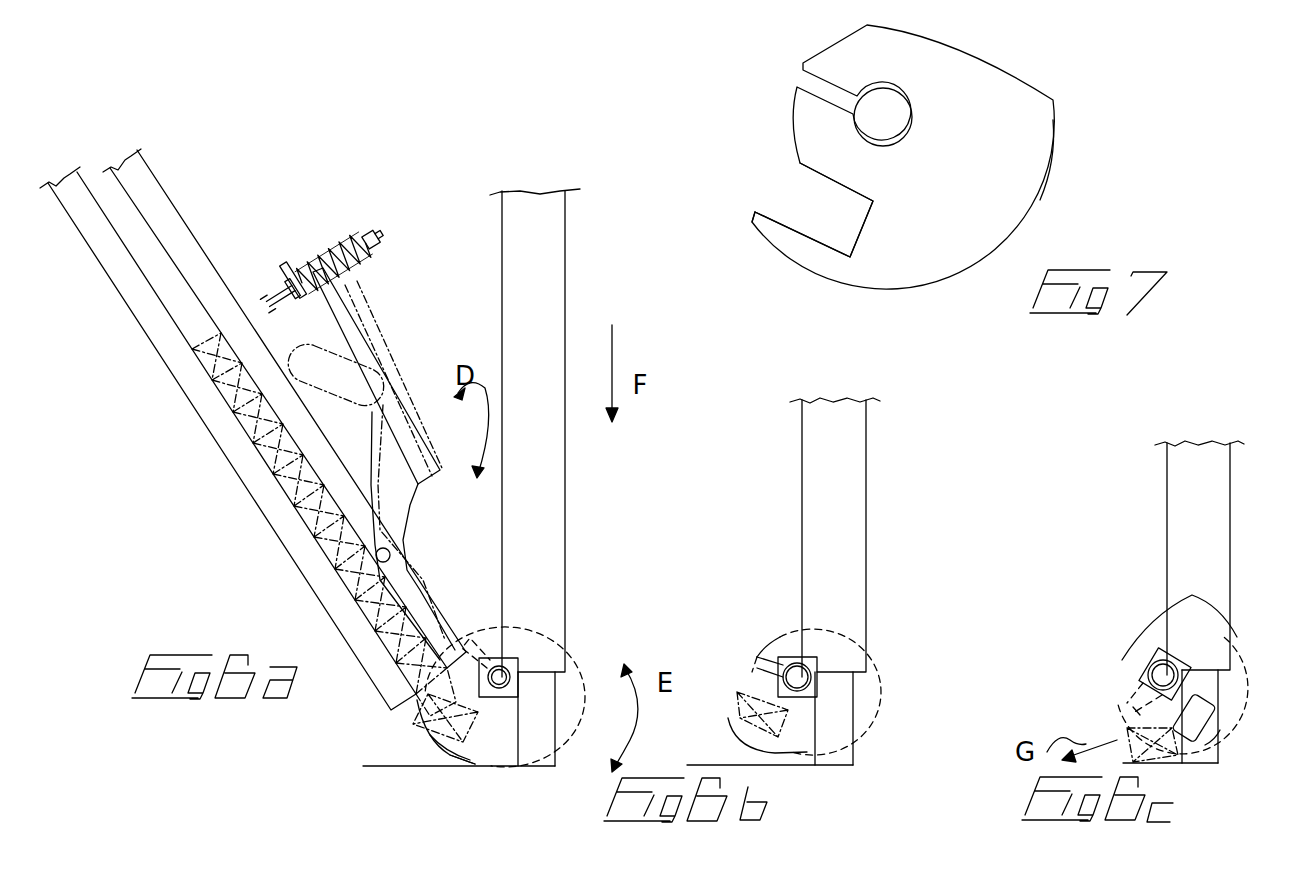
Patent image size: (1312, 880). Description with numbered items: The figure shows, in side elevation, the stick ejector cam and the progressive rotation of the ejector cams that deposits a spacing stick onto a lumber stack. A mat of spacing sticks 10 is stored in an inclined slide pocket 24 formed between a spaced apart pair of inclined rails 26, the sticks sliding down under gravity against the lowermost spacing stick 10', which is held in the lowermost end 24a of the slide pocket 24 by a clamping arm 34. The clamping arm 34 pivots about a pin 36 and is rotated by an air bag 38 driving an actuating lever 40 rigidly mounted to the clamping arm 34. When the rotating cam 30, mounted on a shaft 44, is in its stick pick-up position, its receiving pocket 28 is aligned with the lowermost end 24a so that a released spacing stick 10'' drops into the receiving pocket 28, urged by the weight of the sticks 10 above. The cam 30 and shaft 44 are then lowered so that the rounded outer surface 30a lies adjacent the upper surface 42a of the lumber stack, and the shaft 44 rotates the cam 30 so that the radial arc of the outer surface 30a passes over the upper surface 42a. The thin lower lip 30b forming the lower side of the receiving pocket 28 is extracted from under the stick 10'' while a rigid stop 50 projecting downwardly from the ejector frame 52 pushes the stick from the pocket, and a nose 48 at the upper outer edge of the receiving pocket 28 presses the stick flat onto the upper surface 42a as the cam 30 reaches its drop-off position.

In FIG. 6a, the spacing stick 10 is at (278, 513).
In FIG. 6a, the lowermost spacing stick 10' is at (370, 704).
In FIG. 6c, the released spacing stick 10'' is at (1099, 730).
In FIG. 6a, the slide pocket 24 is at (247, 399).
In FIG. 6a, the lowermost end of slide pocket 24a is at (443, 710).
In FIG. 6a, the inclined rail 26 is at (152, 197).
In FIG. 6a, the receiving pocket 28 is at (440, 715).
In FIG. 6c, the receiving pocket 28 is at (1194, 717).
In FIG. 7, the receiving pocket 28 is at (793, 195).
In FIG. 6a, the rotating cam 30 is at (482, 743).
In FIG. 6b, the rotating cam 30 is at (872, 677).
In FIG. 6c, the rotating cam 30 is at (1183, 674).
In FIG. 7, the rotating cam 30 is at (1035, 145).
In FIG. 7, the rounded outer surface 30a is at (1040, 195).
In FIG. 6a, the lower lip 30b is at (443, 750).
In FIG. 6c, the lower lip 30b is at (1205, 745).
In FIG. 7, the lower lip 30b is at (783, 263).
In FIG. 6a, the clamping arm 34 is at (420, 512).
In FIG. 6a, the pin 36 is at (392, 556).
In FIG. 6a, the air bag 38 is at (310, 348).
In FIG. 6a, the actuating lever 40 is at (367, 372).
In FIG. 6a, the upper surface of lumber stack 42a is at (455, 767).
In FIG. 6b, the upper surface of lumber stack 42a is at (728, 757).
In FIG. 6a, the shaft 44 is at (515, 665).
In FIG. 6b, the shaft 44 is at (797, 677).
In FIG. 6c, the shaft 44 is at (1165, 674).
In FIG. 6c, the nose 48 is at (1140, 715).
In FIG. 7, the nose 48 is at (790, 123).
In FIG. 6a, the stop 50 is at (536, 719).
In FIG. 6b, the stop 50 is at (838, 708).
In FIG. 6c, the stop 50 is at (1205, 688).
In FIG. 6a, the ejector frame 52 is at (553, 497).
In FIG. 6b, the ejector frame 52 is at (851, 462).
In FIG. 6c, the ejector frame 52 is at (1199, 558).